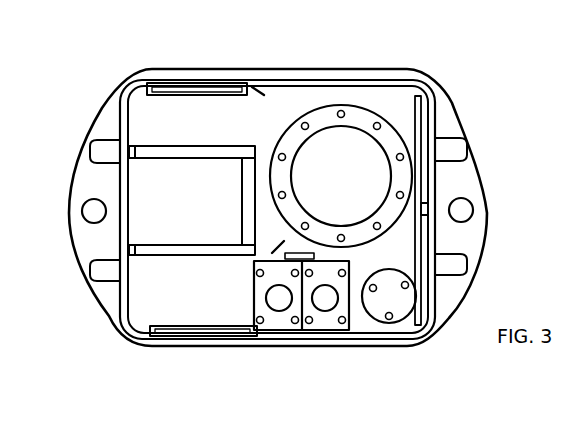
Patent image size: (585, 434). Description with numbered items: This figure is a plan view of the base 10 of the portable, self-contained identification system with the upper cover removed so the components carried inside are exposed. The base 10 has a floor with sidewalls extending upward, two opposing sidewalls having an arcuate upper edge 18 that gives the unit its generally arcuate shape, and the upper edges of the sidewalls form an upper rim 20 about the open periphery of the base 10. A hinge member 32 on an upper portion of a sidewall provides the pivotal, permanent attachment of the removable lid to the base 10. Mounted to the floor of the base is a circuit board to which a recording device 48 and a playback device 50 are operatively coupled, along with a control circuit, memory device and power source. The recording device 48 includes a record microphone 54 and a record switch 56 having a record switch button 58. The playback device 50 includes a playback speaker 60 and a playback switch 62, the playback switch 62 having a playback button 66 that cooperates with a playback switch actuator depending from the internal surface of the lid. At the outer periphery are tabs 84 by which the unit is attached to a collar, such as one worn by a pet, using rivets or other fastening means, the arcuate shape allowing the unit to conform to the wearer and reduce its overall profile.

The base 10 is at (192, 108).
The arcuate upper edge 18 is at (317, 342).
The upper rim 20 is at (416, 80).
The hinge member 32 is at (100, 268).
The recording device 48 is at (364, 318).
The playback device 50 is at (250, 325).
The record microphone 54 is at (405, 297).
The record switch 56 is at (327, 313).
The record switch button 58 is at (330, 292).
The playback speaker 60 is at (393, 142).
The playback switch 62 is at (255, 282).
The playback button 66 is at (275, 303).
The tabs 84 is at (85, 175).